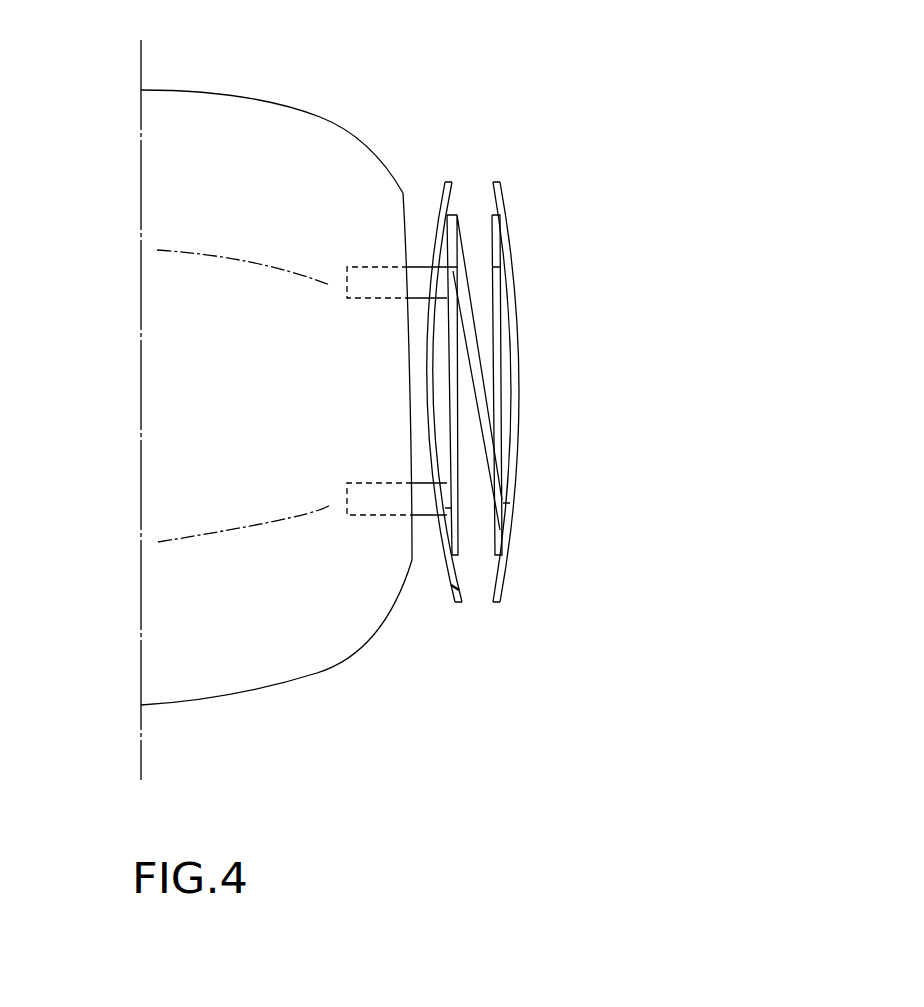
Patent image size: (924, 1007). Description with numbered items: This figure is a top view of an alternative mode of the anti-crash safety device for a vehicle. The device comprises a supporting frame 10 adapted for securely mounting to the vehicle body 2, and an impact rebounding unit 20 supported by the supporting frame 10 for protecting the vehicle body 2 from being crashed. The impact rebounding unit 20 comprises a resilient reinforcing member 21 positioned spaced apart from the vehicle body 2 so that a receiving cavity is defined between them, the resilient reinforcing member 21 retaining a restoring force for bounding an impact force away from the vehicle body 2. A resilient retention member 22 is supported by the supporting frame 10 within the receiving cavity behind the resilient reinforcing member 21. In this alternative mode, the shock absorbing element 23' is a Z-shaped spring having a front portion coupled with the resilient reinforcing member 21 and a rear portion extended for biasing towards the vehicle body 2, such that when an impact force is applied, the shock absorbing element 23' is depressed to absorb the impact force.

The vehicle body 2 is at (210, 153).
The supporting frame 10 is at (422, 502).
The impact rebounding unit 20 is at (777, 283).
The resilient reinforcing member 21 is at (505, 203).
The resilient retention member 22 is at (455, 590).
The shock absorbing element 23' is at (592, 385).